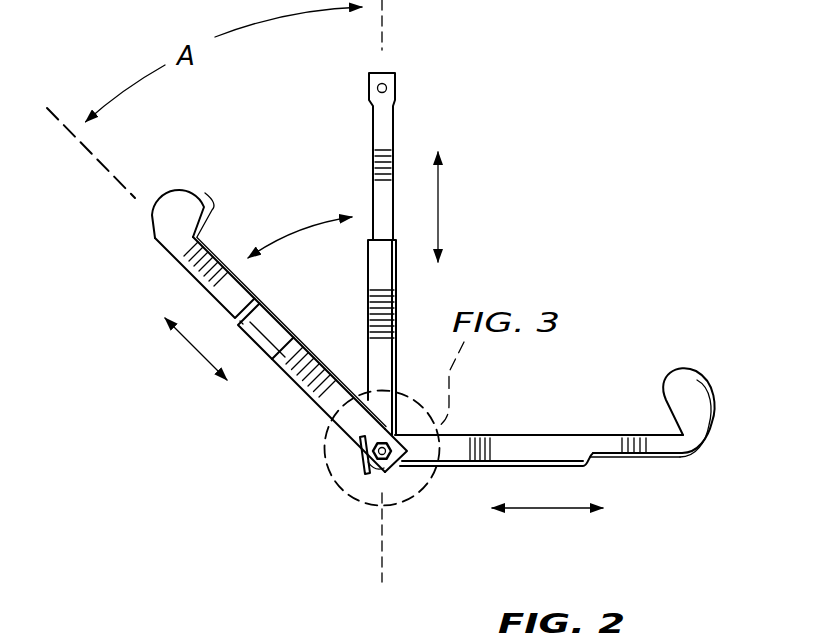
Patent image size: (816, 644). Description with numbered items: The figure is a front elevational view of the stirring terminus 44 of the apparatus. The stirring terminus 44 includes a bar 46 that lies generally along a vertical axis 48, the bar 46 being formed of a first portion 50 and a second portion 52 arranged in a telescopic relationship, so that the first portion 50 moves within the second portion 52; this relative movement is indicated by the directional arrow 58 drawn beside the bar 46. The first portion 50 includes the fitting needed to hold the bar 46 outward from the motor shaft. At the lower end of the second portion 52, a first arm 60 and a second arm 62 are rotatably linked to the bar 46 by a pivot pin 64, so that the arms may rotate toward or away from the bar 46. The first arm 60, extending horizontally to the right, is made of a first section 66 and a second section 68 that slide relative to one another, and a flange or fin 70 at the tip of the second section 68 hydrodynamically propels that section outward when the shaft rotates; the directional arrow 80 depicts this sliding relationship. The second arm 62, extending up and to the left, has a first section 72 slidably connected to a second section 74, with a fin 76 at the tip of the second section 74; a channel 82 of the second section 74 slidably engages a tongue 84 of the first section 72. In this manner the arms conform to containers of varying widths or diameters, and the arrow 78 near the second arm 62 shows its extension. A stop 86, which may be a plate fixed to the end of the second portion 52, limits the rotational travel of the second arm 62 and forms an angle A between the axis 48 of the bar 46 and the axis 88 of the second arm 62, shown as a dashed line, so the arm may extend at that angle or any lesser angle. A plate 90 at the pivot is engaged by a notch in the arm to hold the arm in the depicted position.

The stirring terminus 44 is at (522, 260).
The bar 46 is at (368, 242).
The axis 48 is at (384, 557).
The first portion 50 is at (383, 118).
The second portion 52 is at (373, 270).
The directional arrow 58 is at (440, 208).
The first arm 60 is at (563, 422).
The second arm 62 is at (235, 293).
The pivot pin 64 is at (357, 475).
The first section 66 is at (505, 441).
The second section 68 is at (661, 445).
The flange or fin 70 is at (683, 386).
The first section 72 is at (303, 362).
The second section 74 is at (235, 269).
The fin 76 is at (185, 197).
The left arm adjustment direction 78 is at (193, 348).
The directional arrow 80 is at (544, 509).
The channel 82 is at (282, 318).
The tongue 84 is at (235, 323).
The stop 86 is at (372, 490).
The axis 88 is at (112, 190).
The plate 90 is at (352, 458).